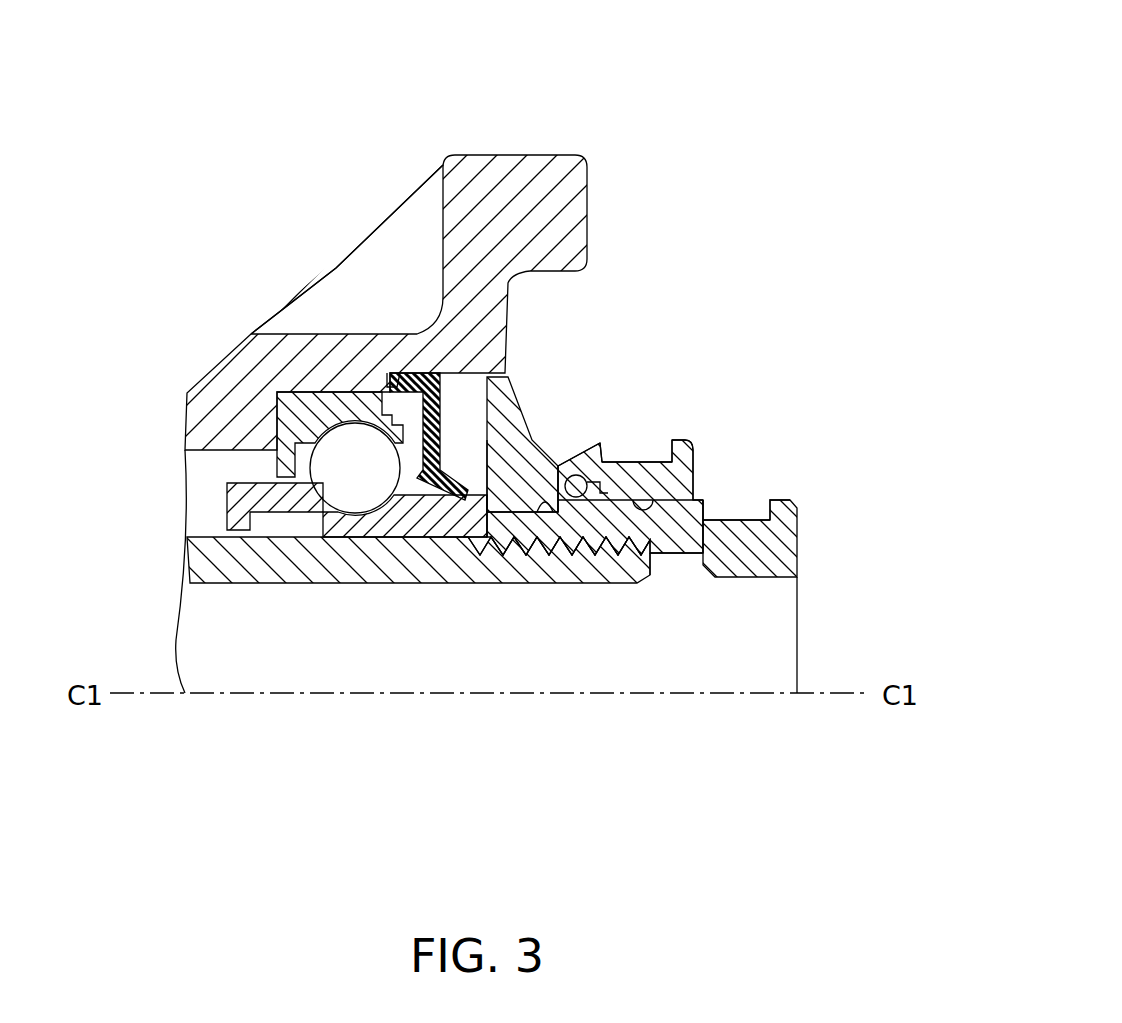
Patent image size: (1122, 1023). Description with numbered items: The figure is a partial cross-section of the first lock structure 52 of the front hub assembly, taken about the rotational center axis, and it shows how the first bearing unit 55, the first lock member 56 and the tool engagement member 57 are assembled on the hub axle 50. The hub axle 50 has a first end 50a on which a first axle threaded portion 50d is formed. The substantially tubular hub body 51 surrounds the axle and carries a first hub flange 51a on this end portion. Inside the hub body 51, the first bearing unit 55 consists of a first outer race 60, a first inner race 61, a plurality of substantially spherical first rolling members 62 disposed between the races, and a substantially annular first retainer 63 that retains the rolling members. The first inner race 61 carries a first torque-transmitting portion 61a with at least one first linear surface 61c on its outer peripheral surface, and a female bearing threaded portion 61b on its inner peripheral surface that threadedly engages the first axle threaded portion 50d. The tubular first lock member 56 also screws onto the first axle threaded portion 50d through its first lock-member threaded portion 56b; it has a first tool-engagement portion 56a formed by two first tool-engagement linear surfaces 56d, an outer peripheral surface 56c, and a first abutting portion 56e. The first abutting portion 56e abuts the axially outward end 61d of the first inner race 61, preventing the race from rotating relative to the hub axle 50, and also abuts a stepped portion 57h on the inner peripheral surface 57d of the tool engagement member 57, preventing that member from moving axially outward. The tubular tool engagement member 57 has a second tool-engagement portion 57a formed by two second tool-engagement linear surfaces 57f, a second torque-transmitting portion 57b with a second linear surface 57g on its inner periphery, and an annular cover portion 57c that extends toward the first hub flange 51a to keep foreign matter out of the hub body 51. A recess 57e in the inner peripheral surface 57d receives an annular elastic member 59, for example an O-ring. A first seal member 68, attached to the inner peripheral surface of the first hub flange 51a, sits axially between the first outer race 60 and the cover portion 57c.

The hub axle 50 is at (385, 593).
The first end 50a is at (613, 548).
The first axle threaded portion 50d is at (660, 532).
The hub body 51 is at (223, 333).
The first hub flange 51a is at (500, 178).
The first lock structure 52 is at (697, 143).
The first bearing unit 55 is at (262, 407).
The first lock member 56 is at (812, 540).
The first tool-engagement portion 56a is at (738, 492).
The first lock-member threaded portion 56b is at (712, 548).
The outer peripheral surface 56c is at (667, 501).
The first tool-engagement linear surfaces 56d is at (753, 518).
The first abutting portion 56e is at (665, 535).
The tool engagement member 57 is at (700, 458).
The second tool-engagement portion 57a is at (622, 460).
The second torque-transmitting portion 57b is at (483, 487).
The cover portion 57c is at (508, 400).
The inner peripheral surface 57d is at (700, 435).
The recess 57e is at (637, 432).
The second tool-engagement linear surfaces 57f is at (645, 462).
The second linear surface 57g is at (558, 492).
The stepped portion 57h is at (690, 578).
The elastic member 59 is at (600, 443).
The first outer race 60 is at (285, 443).
The first inner race 61 is at (368, 545).
The first torque-transmitting portion 61a is at (520, 515).
The bearing threaded portion 61b is at (485, 505).
The first linear surface 61c is at (545, 520).
The axially outward end 61d is at (562, 560).
The first rolling members 62 is at (343, 500).
The first retainer 63 is at (237, 502).
The first seal member 68 is at (410, 368).